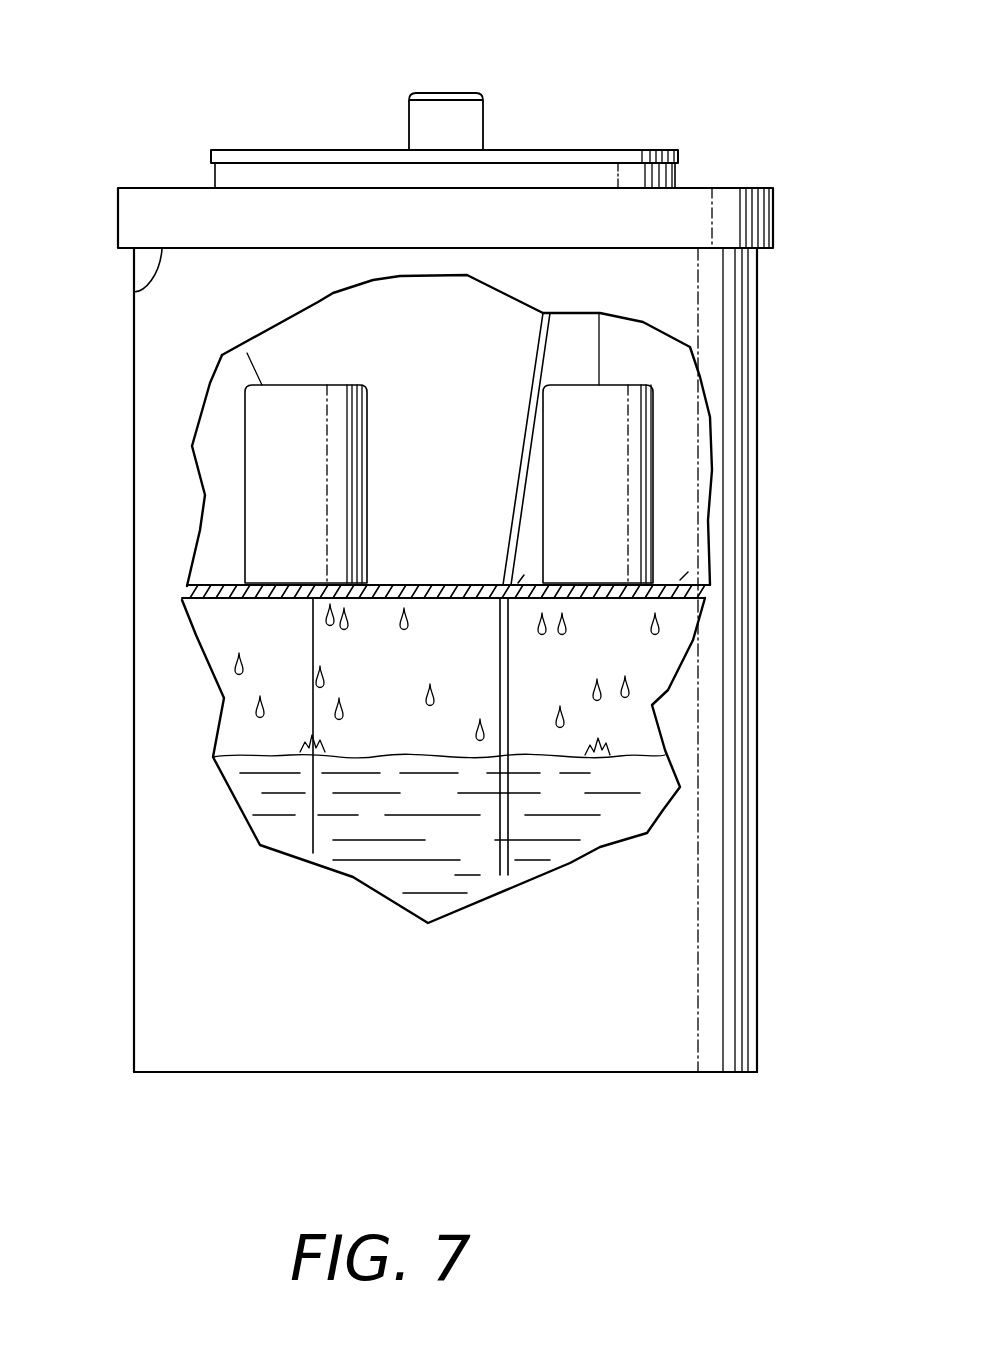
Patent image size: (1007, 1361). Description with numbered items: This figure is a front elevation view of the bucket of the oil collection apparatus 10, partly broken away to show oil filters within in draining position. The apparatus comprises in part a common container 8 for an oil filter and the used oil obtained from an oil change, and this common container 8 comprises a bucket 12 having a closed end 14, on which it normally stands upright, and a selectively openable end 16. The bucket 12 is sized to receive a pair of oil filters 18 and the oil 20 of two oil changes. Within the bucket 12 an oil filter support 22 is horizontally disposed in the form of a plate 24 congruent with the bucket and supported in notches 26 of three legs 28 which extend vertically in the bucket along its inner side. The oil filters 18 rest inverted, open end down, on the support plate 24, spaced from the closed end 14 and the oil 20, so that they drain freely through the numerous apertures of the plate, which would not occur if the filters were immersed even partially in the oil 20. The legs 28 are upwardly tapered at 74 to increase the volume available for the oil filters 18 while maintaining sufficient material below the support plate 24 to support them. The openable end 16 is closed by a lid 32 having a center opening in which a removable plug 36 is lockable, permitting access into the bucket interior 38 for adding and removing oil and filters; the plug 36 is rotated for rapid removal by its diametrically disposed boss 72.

The common container 8 is at (128, 665).
The oil collection apparatus 10 is at (172, 112).
The bucket 12 is at (133, 432).
The closed end 14 is at (558, 1070).
The selectively openable end 16 is at (133, 292).
The oil filters 18 is at (300, 383).
The oil 20 is at (647, 787).
The oil filter support 22 is at (680, 578).
The plate 24 is at (428, 583).
The notches 26 is at (518, 582).
The legs 28 is at (225, 517).
The lid 32 is at (727, 186).
The removable plug 36 is at (600, 149).
The bucket interior 38 is at (447, 455).
The boss 72 is at (455, 92).
The upward taper 74 is at (552, 335).